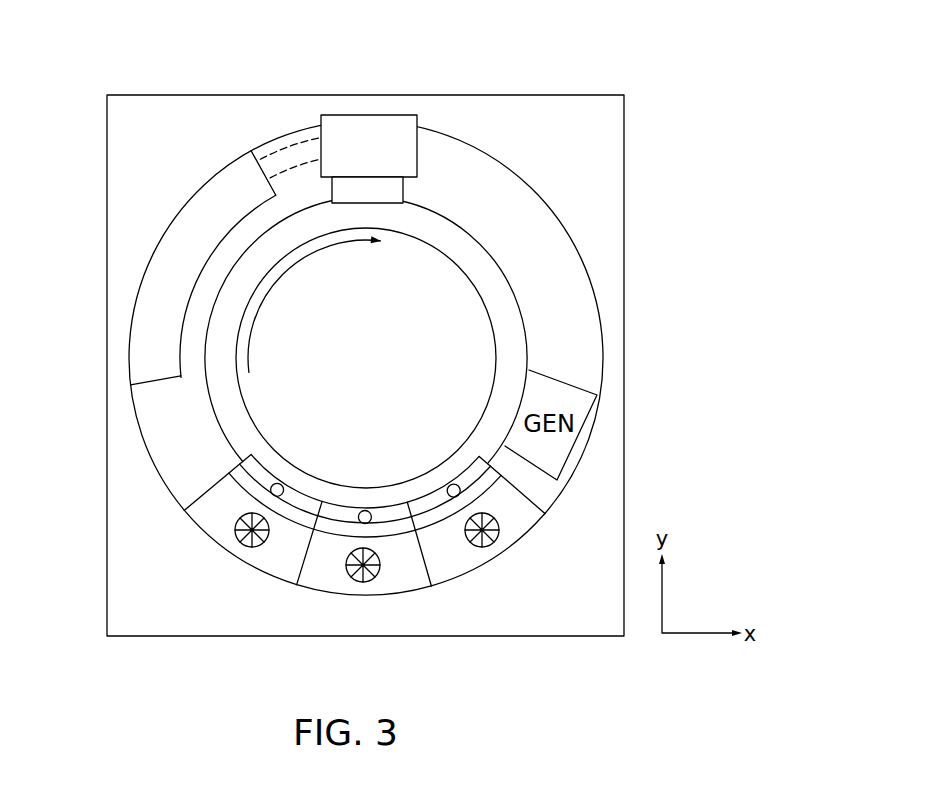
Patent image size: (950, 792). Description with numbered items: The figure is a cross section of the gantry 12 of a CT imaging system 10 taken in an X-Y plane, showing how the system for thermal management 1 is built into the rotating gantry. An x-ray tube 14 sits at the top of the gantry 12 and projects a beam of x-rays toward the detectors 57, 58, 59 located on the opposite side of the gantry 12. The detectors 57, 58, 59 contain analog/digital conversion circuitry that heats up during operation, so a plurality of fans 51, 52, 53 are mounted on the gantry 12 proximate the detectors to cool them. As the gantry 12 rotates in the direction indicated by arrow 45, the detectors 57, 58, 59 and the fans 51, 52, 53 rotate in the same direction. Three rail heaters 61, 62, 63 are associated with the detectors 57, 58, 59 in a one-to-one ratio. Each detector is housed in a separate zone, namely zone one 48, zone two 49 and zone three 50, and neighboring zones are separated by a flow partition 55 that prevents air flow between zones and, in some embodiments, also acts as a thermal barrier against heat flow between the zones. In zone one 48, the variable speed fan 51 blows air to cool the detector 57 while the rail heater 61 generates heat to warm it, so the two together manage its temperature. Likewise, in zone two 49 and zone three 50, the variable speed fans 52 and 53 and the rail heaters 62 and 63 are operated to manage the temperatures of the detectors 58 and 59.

The system for thermal management 1 is at (441, 468).
The CT imaging system 10 is at (641, 45).
The gantry 12 is at (106, 549).
The x-ray tube 14 is at (372, 114).
The arrow 45 is at (318, 256).
The zone one 48 is at (253, 574).
The zone two 49 is at (398, 608).
The zone three 50 is at (541, 535).
The fan 51 is at (240, 542).
The fan 52 is at (356, 582).
The fan 53 is at (492, 546).
The flow partition 55 is at (299, 572).
The detector 57 is at (277, 483).
The detector 58 is at (399, 504).
The detector 59 is at (453, 484).
The rail heater 61 is at (290, 481).
The rail heater 62 is at (364, 510).
The rail heater 63 is at (447, 500).